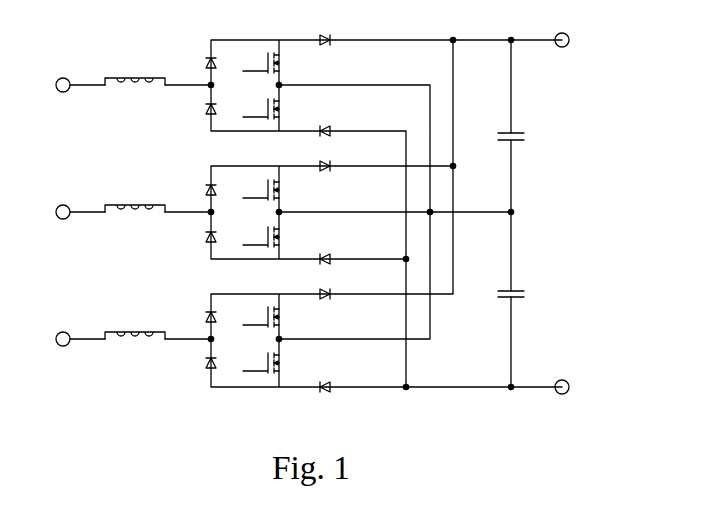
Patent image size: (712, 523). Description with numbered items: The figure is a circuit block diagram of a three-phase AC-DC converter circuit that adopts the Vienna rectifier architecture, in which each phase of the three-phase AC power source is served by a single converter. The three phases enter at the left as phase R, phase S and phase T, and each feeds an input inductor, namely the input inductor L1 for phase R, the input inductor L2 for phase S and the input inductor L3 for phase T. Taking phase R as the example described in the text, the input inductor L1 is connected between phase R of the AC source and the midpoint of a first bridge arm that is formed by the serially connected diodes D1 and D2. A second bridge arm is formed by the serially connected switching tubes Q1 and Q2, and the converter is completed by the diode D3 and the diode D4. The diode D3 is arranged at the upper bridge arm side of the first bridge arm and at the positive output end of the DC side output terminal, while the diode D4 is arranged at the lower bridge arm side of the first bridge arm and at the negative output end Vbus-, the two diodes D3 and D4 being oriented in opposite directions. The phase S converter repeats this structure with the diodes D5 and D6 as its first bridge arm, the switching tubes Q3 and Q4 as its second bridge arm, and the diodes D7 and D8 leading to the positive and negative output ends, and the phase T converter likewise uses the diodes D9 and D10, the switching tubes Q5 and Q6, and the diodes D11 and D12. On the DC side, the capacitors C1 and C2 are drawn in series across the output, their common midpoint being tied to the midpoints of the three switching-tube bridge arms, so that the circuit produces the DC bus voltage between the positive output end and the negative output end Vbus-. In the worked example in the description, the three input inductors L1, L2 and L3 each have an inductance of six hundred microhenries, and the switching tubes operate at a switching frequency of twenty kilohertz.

The phase R is at (70, 85).
The phase S is at (70, 212).
The phase T is at (69, 339).
The input inductor L1 is at (158, 73).
The input inductor L2 is at (158, 200).
The input inductor L3 is at (158, 327).
The diode D1 is at (198, 63).
The diode D2 is at (198, 109).
The diode D3 is at (326, 30).
The diode D4 is at (326, 121).
The diode D5 is at (198, 190).
The diode D6 is at (198, 237).
The diode D7 is at (326, 157).
The diode D8 is at (326, 248).
The diode D9 is at (198, 317).
The diode D10 is at (193, 363).
The diode D11 is at (320, 285).
The diode D12 is at (319, 377).
The switching tube Q1 is at (260, 62).
The switching tube Q2 is at (260, 108).
The switching tube Q3 is at (260, 189).
The switching tube Q4 is at (260, 236).
The switching tube Q5 is at (260, 316).
The switching tube Q6 is at (260, 362).
The DC bus capacitor C1 is at (499, 137).
The DC bus capacitor C2 is at (499, 294).
The negative output end Vbus- is at (590, 388).